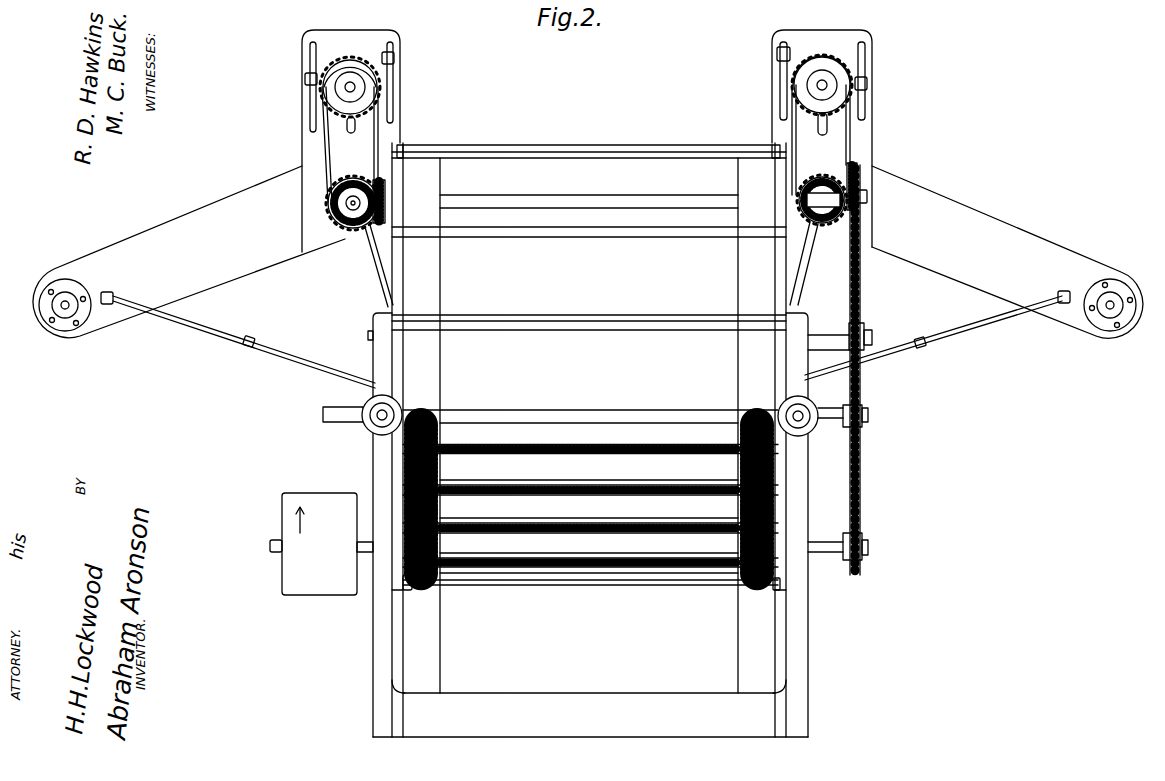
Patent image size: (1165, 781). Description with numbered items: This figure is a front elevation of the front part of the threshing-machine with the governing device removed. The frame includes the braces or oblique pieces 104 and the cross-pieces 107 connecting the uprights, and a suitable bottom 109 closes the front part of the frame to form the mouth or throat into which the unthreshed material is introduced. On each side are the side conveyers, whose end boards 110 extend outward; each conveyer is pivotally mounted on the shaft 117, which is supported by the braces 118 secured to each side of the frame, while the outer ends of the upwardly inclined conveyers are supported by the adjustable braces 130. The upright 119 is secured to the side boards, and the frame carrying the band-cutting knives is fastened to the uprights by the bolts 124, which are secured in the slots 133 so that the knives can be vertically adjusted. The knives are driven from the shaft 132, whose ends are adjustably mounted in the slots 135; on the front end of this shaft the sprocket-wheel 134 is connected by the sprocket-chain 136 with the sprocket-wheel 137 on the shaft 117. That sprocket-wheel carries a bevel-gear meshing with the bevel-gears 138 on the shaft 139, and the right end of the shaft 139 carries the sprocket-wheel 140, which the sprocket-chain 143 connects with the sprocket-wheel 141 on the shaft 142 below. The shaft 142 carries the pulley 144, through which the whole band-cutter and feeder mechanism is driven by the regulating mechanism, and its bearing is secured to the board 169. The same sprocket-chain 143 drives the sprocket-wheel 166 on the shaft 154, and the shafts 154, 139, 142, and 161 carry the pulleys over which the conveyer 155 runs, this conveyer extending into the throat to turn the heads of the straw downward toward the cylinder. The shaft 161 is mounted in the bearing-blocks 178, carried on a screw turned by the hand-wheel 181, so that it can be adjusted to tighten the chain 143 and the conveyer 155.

The braces or oblique pieces 104 is at (809, 626).
The cross-pieces 107 is at (590, 715).
The bottom 109 is at (503, 425).
The end boards 110 is at (588, 252).
The shaft 117 is at (337, 232).
The braces 118 is at (375, 257).
The upright 119 is at (866, 134).
The bolts 124 is at (776, 52).
The adjustable braces 130 is at (213, 327).
The shaft 132 is at (815, 85).
The slots 133 is at (866, 100).
The sprocket-wheel 134 is at (841, 81).
The slots 135 is at (824, 128).
The sprocket-chain 136 is at (858, 154).
The sprocket-wheel 137 is at (848, 173).
The bevel-gears 138 is at (794, 198).
The shaft 139 is at (679, 201).
The sprocket-wheel 140 is at (850, 212).
The sprocket-wheel 141 is at (844, 540).
The shaft 142 is at (276, 540).
The sprocket-chain 143 is at (863, 447).
The pulley 144 is at (327, 544).
The shaft 154 is at (873, 338).
The conveyer 155 is at (746, 266).
The shaft 161 is at (656, 416).
The sprocket-wheel 166 is at (852, 339).
The board 169 is at (845, 430).
The bearing-blocks 178 is at (523, 145).
The hand-wheel 181 is at (370, 427).